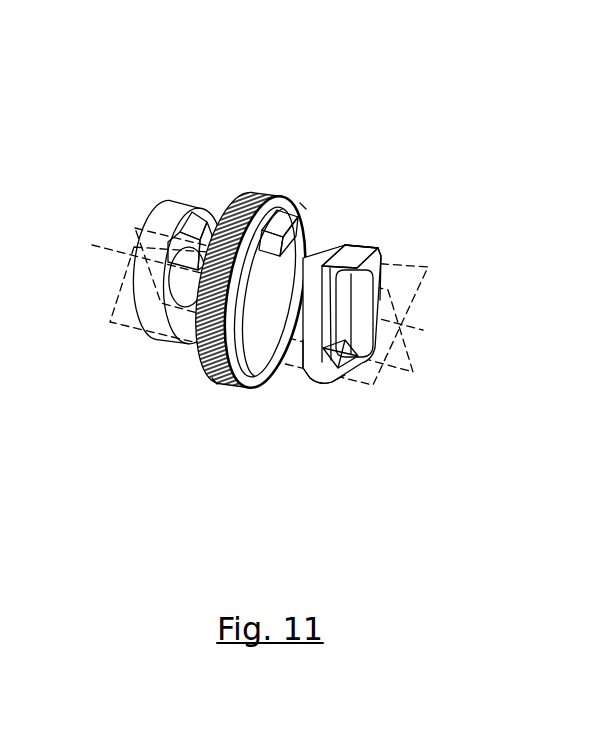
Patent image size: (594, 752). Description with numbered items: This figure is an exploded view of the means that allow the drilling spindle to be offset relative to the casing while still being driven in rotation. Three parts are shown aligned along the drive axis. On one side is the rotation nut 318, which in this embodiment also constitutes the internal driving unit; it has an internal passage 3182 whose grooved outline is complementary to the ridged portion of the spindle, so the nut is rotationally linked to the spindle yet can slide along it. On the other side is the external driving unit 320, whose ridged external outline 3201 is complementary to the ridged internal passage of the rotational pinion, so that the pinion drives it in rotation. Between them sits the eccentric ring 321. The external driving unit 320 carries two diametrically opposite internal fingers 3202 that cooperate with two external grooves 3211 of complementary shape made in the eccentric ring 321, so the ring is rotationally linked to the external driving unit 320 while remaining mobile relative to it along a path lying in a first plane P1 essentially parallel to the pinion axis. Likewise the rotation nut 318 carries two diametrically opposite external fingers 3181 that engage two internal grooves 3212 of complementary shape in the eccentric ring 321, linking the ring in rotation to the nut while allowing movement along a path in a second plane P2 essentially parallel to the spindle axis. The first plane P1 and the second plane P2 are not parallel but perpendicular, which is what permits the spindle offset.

The rotation nut 318 is at (153, 328).
The external fingers 3181 is at (206, 200).
The internal passage 3182 is at (247, 367).
The external driving unit 320 is at (247, 400).
The external outline 3201 is at (262, 190).
The internal fingers 3202 is at (300, 203).
The eccentric ring 321 is at (360, 245).
The flange of hub member 3211 is at (385, 262).
The internal grooves 3212 is at (343, 245).
The first plane P1 is at (417, 290).
The second plane P2 is at (413, 370).